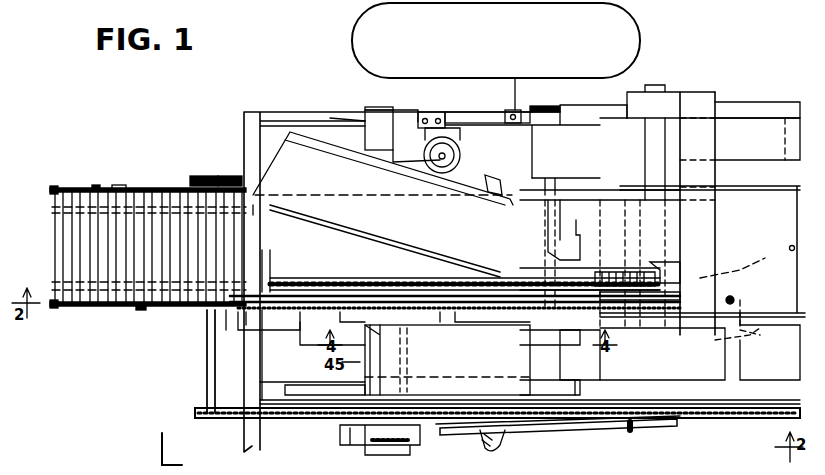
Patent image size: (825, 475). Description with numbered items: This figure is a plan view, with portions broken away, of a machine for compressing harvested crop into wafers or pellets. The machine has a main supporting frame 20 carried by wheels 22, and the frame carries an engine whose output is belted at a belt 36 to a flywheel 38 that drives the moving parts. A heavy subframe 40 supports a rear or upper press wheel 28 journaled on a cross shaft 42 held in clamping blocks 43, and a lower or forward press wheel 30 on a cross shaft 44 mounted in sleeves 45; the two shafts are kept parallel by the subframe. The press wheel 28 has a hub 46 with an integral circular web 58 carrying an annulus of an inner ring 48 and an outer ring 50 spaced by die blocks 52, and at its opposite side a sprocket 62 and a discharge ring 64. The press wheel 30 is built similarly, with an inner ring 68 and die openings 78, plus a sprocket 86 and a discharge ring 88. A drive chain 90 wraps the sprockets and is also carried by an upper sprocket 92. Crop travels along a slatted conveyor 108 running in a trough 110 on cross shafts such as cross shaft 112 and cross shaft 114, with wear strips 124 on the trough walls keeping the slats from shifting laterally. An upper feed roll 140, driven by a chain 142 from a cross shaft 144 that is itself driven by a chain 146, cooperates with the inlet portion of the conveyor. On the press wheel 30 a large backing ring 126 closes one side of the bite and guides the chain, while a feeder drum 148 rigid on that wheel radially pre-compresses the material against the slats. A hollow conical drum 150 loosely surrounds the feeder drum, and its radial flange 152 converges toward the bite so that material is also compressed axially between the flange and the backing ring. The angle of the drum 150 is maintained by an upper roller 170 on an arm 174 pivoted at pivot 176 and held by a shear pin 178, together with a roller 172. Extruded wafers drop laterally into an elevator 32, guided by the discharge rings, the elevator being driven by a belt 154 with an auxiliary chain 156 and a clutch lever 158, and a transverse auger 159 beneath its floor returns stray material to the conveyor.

The main supporting frame 20 is at (282, 112).
The wheels 22 is at (618, 16).
The rear or upper press wheel 28 is at (680, 266).
The lower or forward press wheel 30 is at (262, 318).
The elevator 32 is at (774, 372).
The belt 36 is at (792, 125).
The flywheel 38 is at (762, 120).
The subframe 40 is at (405, 108).
The cross shaft 42 is at (546, 104).
The clamping blocks 43 is at (566, 103).
The cross shaft 44 is at (378, 108).
The sleeves 45 is at (360, 118).
The hub 46 is at (582, 235).
The inner ring 48 is at (662, 264).
The outer ring 50 is at (666, 290).
The die blocks 52 is at (608, 272).
The circular web 58 is at (650, 270).
The sprocket 62 is at (478, 320).
The discharge ring 64 is at (504, 322).
The inner ring 68 is at (292, 282).
The die openings 78 is at (412, 278).
The sprocket 86 is at (298, 310).
The discharge ring 88 is at (440, 322).
The drive chain 90 is at (296, 320).
The upper sprocket 92 is at (745, 275).
The conveyor 108 is at (118, 186).
The trough 110 is at (160, 188).
The cross shaft 112 is at (96, 185).
The cross shaft 114 is at (140, 310).
The wear strips 124 is at (68, 188).
The backing ring 126 is at (250, 316).
The upper feed roll 140 is at (226, 176).
The chain 142 is at (196, 176).
The cross shaft 144 is at (204, 375).
The chain 146 is at (232, 420).
The feeder drum 148 is at (318, 247).
The drum 150 is at (300, 138).
The radial flange 152 is at (382, 246).
The belt 154 is at (572, 428).
The auxiliary chain 156 is at (446, 452).
The lever 158 is at (340, 428).
The transverse auger 159 is at (772, 355).
The upper roller 170 is at (422, 150).
The roller 172 is at (497, 180).
The arm 174 is at (466, 112).
The pivot 176 is at (514, 108).
The shear pin 178 is at (428, 112).